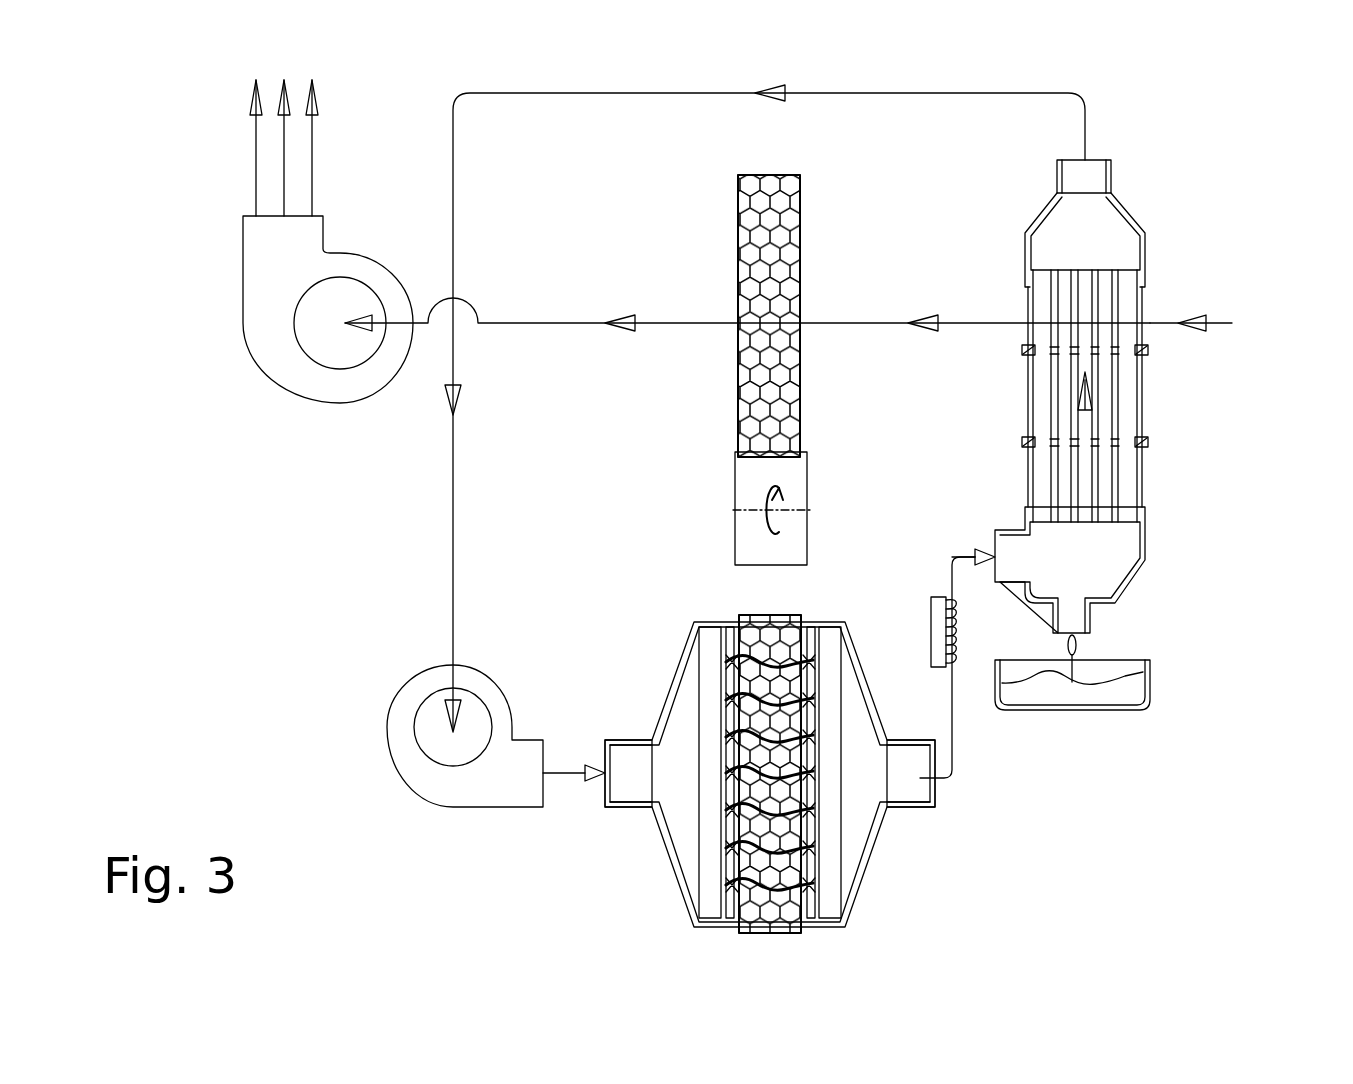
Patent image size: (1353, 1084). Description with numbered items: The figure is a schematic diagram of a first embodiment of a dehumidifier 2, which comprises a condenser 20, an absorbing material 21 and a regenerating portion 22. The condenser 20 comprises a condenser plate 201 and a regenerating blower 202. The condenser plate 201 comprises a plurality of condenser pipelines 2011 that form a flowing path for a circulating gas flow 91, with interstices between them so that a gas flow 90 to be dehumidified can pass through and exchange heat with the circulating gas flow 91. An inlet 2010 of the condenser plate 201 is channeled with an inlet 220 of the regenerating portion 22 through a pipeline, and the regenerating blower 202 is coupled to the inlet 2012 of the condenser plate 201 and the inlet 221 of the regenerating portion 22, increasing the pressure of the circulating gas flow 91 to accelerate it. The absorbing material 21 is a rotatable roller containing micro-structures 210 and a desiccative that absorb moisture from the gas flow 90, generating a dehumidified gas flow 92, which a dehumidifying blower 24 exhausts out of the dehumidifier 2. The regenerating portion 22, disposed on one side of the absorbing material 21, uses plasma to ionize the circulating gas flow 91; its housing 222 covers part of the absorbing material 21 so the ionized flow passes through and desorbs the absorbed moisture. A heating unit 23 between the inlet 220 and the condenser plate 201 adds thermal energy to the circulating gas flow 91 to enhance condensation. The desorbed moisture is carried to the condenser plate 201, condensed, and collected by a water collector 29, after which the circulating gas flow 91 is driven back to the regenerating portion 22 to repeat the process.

The dehumidifier 2 is at (150, 186).
The condenser 20 is at (1020, 242).
The absorbing material 21 is at (737, 240).
The regenerating portion 22 is at (700, 615).
The heating unit 23 is at (940, 620).
The dehumidifying blower 24 is at (325, 385).
The water collector 29 is at (1148, 700).
The gas flow 90 is at (1232, 330).
The circulating gas flow 91 is at (1073, 103).
The dehumidified gas flow 92 is at (578, 322).
The condenser plate 201 is at (1142, 307).
The regenerating blower 202 is at (487, 685).
The micro-structures 210 is at (785, 215).
The inlet of the regenerating portion 220 is at (905, 790).
The inlet of the regenerating portion 221 is at (632, 760).
The housing 222 is at (668, 845).
The inlet of the condenser plate 2010 is at (1002, 538).
The condenser pipelines 2011 is at (1143, 390).
The inlet of the condenser plate 2012 is at (1093, 169).